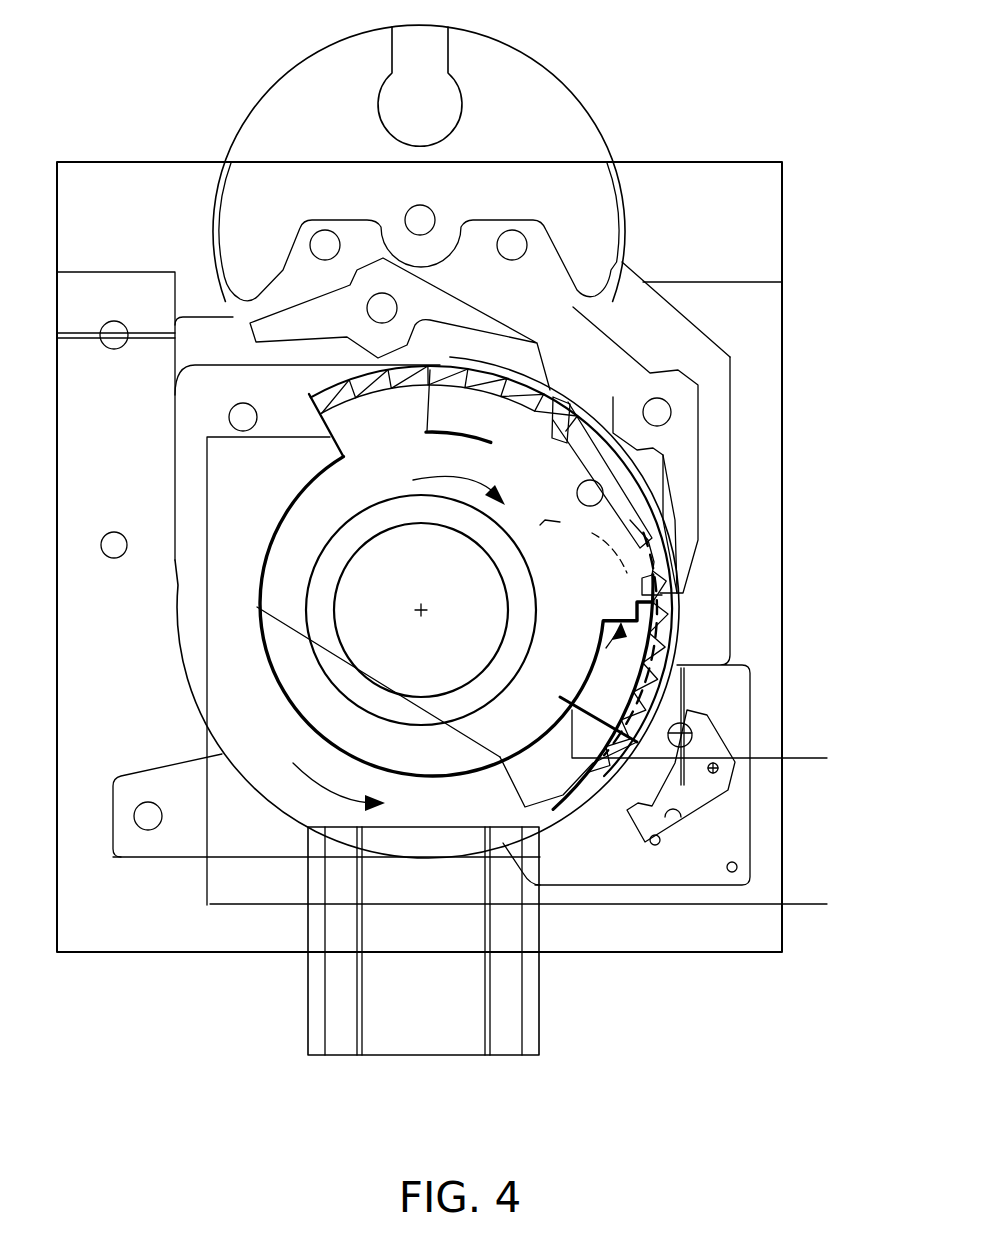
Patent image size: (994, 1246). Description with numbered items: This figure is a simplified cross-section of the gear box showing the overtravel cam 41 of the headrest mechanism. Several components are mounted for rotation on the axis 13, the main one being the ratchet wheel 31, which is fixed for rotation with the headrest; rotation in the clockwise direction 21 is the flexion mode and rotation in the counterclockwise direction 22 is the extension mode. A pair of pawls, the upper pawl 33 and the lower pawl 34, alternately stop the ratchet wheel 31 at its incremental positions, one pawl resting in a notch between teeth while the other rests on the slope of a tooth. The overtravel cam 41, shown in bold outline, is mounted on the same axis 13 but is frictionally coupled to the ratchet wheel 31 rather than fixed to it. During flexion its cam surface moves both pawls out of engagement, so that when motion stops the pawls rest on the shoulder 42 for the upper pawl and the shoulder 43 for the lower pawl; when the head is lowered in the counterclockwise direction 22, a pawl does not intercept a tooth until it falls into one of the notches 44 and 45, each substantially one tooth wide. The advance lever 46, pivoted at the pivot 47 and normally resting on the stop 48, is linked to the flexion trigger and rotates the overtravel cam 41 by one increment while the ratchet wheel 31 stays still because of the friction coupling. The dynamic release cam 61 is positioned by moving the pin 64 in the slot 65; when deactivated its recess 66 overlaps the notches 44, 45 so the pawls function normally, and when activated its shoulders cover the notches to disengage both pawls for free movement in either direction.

The axis 13 is at (422, 608).
The clockwise direction arrow 21 is at (422, 480).
The counterclockwise direction arrow 22 is at (310, 778).
The ratchet wheel 31 is at (560, 815).
The upper pawl 33 is at (283, 325).
The lower pawl 34 is at (680, 368).
The overtravel cam 41 is at (650, 537).
The shoulder 42 is at (470, 355).
The shoulder 43 is at (543, 525).
The notch 44 is at (537, 417).
The notch 45 is at (648, 550).
The advance lever 46 is at (702, 800).
The pivot 47 is at (713, 770).
The stop 48 is at (660, 840).
The dynamic release cam 61 is at (612, 650).
The pin 64 is at (588, 480).
The slot 65 is at (598, 557).
The recess 66 is at (552, 437).